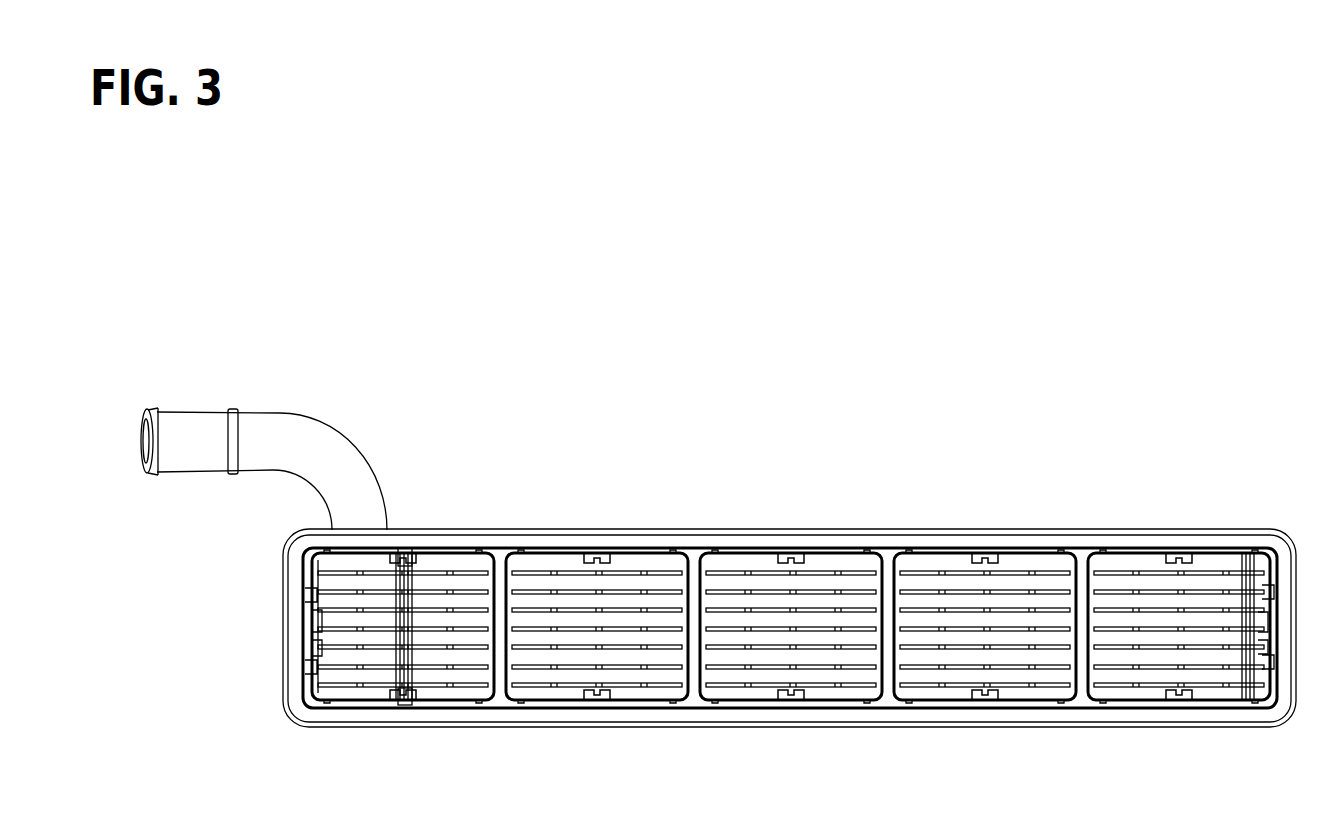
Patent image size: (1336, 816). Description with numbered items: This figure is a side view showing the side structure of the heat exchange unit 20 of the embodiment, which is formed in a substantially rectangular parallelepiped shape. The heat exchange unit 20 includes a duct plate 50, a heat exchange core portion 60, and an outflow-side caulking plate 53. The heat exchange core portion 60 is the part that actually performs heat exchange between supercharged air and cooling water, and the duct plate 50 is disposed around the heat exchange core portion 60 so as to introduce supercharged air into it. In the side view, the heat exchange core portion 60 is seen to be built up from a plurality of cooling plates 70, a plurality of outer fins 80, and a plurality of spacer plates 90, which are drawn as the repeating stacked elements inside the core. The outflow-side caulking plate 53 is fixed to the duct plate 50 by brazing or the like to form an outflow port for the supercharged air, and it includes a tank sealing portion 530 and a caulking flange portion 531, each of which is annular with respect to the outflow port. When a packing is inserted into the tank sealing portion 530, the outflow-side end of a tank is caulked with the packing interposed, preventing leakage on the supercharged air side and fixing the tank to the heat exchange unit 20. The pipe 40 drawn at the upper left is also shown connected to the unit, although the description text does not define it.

The heat exchange unit 20 is at (1222, 426).
The connection pipe 40 is at (203, 412).
The duct plate 50 is at (786, 495).
The outflow-side caulking plate 53 is at (937, 530).
The heat exchange core portion 60 is at (560, 567).
The cooling plates 70 is at (457, 567).
The outer fins 80 is at (403, 557).
The spacer plates 90 is at (324, 567).
The tank sealing portion 530 is at (1020, 548).
The caulking flange portion 531 is at (1113, 530).